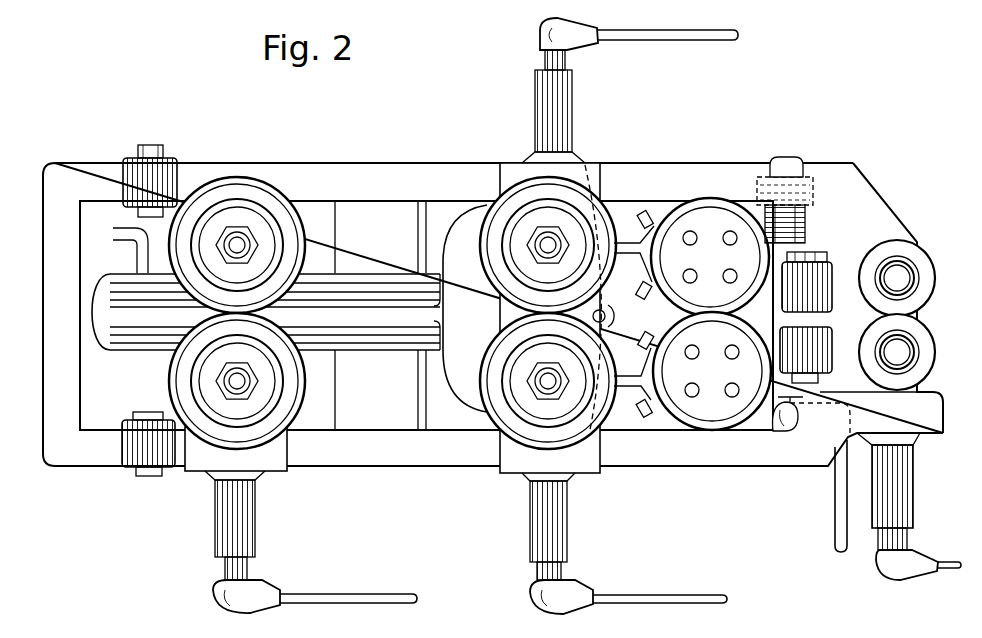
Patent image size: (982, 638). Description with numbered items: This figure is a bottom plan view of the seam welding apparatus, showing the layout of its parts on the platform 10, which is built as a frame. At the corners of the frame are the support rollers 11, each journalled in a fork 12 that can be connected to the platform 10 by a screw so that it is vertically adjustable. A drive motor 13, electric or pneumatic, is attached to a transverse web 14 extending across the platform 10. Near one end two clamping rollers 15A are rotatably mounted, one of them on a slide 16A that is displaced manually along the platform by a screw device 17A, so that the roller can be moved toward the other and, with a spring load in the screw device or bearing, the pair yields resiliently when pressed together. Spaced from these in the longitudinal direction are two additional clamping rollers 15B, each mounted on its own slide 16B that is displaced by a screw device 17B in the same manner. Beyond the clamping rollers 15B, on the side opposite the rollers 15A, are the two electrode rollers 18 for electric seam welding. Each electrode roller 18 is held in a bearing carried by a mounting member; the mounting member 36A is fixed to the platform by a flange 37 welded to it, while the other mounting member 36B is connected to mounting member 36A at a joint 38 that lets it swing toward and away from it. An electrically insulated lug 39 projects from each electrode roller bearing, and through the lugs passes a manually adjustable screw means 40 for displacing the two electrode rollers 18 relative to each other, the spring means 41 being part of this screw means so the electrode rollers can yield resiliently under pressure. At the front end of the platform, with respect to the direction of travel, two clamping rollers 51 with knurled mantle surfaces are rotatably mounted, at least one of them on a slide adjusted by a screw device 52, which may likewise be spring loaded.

The platform 10 is at (385, 178).
The support rollers 11 is at (163, 170).
The forks 12 is at (133, 157).
The drive motor 13 is at (358, 338).
The transverse web 14 is at (335, 238).
The clamping rollers 15A is at (232, 192).
The additional clamping rollers 15B is at (620, 210).
The slide 16A is at (270, 460).
The slide 16B is at (517, 168).
The screw device 17A is at (268, 592).
The screw device 17B is at (575, 38).
The electrode rollers 18 is at (708, 222).
The mounting member 36A is at (660, 212).
The mounting member 36B is at (665, 420).
The flange 37 is at (585, 175).
The joint 38 is at (614, 313).
The lug 39 is at (780, 248).
The screw means 40 is at (793, 417).
The spring means 41 is at (820, 210).
The clamping rollers 51 is at (920, 343).
The screw device 52 is at (903, 493).